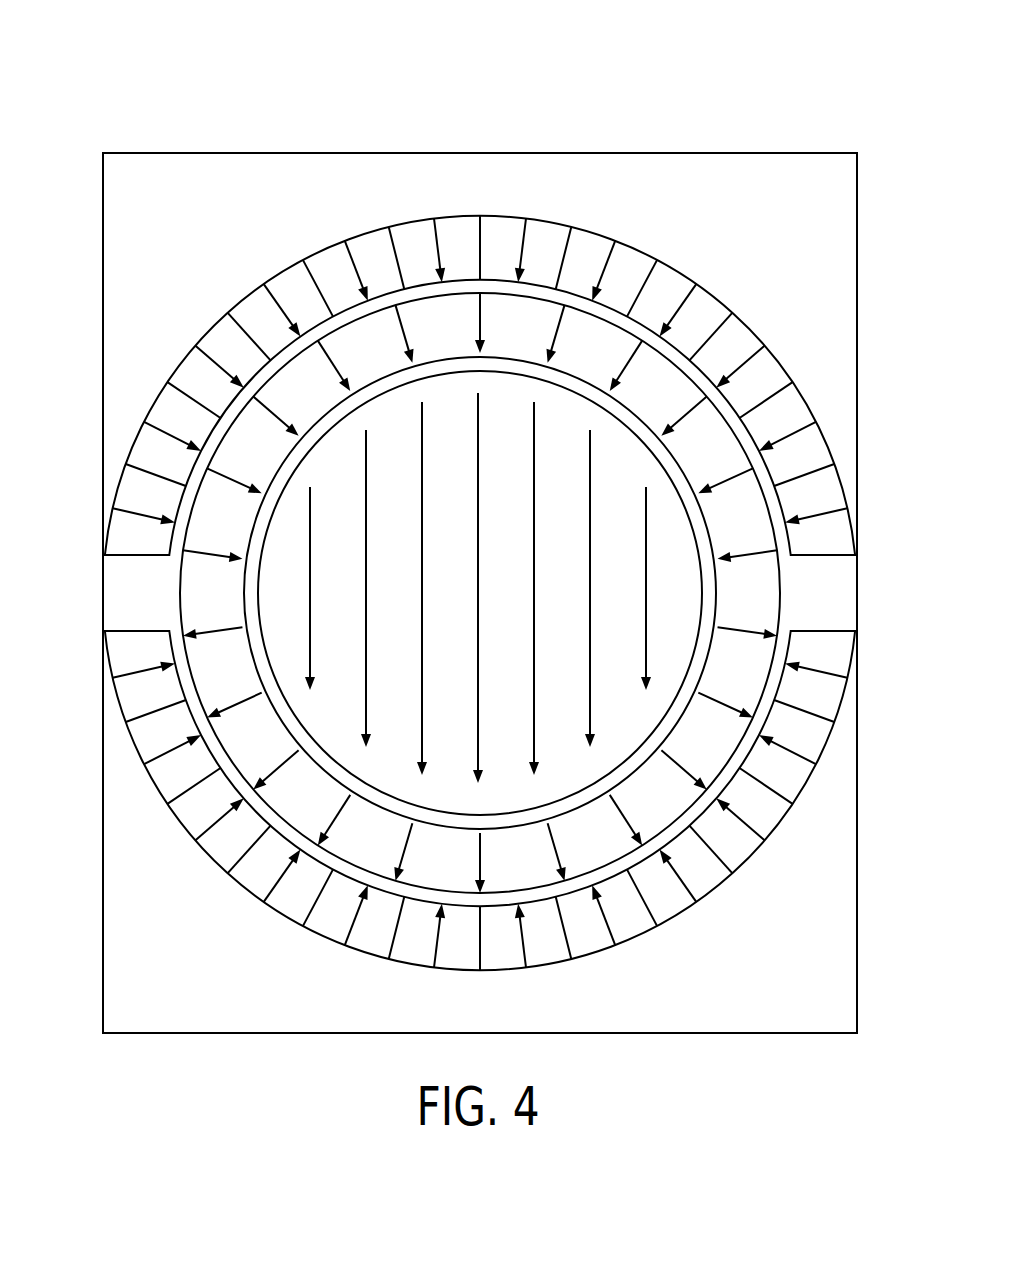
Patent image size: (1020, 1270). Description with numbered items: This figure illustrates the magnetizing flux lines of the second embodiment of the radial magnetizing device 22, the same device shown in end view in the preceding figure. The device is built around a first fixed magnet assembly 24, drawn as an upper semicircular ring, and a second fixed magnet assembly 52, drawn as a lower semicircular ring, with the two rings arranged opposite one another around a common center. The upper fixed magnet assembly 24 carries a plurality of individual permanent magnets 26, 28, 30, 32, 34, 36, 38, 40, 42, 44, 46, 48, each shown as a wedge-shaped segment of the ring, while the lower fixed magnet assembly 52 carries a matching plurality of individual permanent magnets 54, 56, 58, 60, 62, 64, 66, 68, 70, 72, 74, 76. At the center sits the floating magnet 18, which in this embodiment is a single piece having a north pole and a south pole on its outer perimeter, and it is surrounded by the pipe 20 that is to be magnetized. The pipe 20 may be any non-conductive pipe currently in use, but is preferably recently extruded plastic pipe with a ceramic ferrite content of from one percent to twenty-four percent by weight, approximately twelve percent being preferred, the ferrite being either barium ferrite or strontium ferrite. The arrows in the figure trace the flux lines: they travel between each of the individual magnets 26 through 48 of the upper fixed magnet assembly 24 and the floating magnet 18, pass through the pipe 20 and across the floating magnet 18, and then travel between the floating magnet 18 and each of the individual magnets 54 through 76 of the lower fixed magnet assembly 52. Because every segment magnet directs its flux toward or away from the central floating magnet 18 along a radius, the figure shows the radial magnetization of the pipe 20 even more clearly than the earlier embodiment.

The floating magnet 18 is at (437, 592).
The pipe 20 is at (782, 585).
The radial magnetizing device 22 is at (533, 100).
The fixed magnet assembly 24 is at (857, 362).
The permanent magnet 26 is at (118, 490).
The permanent magnet 28 is at (147, 410).
The permanent magnet 30 is at (208, 330).
The permanent magnet 32 is at (287, 270).
The permanent magnet 34 is at (370, 232).
The permanent magnet 36 is at (443, 217).
The permanent magnet 38 is at (538, 218).
The permanent magnet 40 is at (625, 243).
The permanent magnet 42 is at (705, 292).
The permanent magnet 44 is at (768, 345).
The permanent magnet 46 is at (807, 400).
The permanent magnet 48 is at (842, 477).
The fixed magnet assembly 52 is at (857, 795).
The permanent magnet 54 is at (108, 641).
The permanent magnet 56 is at (140, 753).
The permanent magnet 58 is at (217, 865).
The permanent magnet 60 is at (257, 898).
The permanent magnet 62 is at (342, 945).
The permanent magnet 64 is at (403, 965).
The permanent magnet 66 is at (512, 970).
The permanent magnet 68 is at (603, 950).
The permanent magnet 70 is at (688, 910).
The permanent magnet 72 is at (757, 852).
The permanent magnet 74 is at (810, 783).
The permanent magnet 76 is at (843, 700).